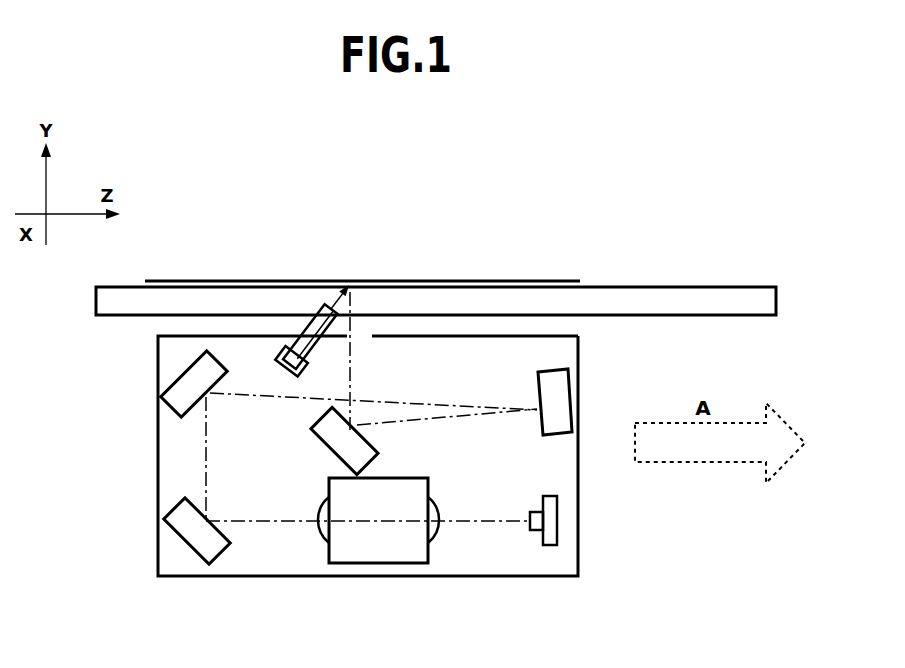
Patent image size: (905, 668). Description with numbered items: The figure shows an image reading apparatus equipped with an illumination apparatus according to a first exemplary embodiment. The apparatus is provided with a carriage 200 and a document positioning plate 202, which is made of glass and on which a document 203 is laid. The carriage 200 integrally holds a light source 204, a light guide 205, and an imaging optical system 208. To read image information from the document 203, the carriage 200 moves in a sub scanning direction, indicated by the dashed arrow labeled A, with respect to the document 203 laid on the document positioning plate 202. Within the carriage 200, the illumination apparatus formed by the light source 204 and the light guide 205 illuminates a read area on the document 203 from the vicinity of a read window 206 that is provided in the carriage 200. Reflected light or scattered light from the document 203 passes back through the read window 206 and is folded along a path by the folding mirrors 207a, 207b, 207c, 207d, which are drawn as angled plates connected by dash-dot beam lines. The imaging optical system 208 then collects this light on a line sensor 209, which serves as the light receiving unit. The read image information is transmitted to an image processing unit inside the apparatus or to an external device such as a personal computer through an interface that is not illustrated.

The carriage 200 is at (157, 483).
The document positioning plate 202 is at (677, 298).
The document 203 is at (402, 280).
The light source 204 is at (283, 362).
The light guide 205 is at (300, 327).
The read window 206 is at (363, 338).
The folding mirror 207a is at (333, 448).
The folding mirror 207b is at (563, 398).
The folding mirror 207c is at (159, 395).
The folding mirror 207d is at (192, 537).
The imaging optical system 208 is at (376, 565).
The line sensor 209 is at (553, 520).